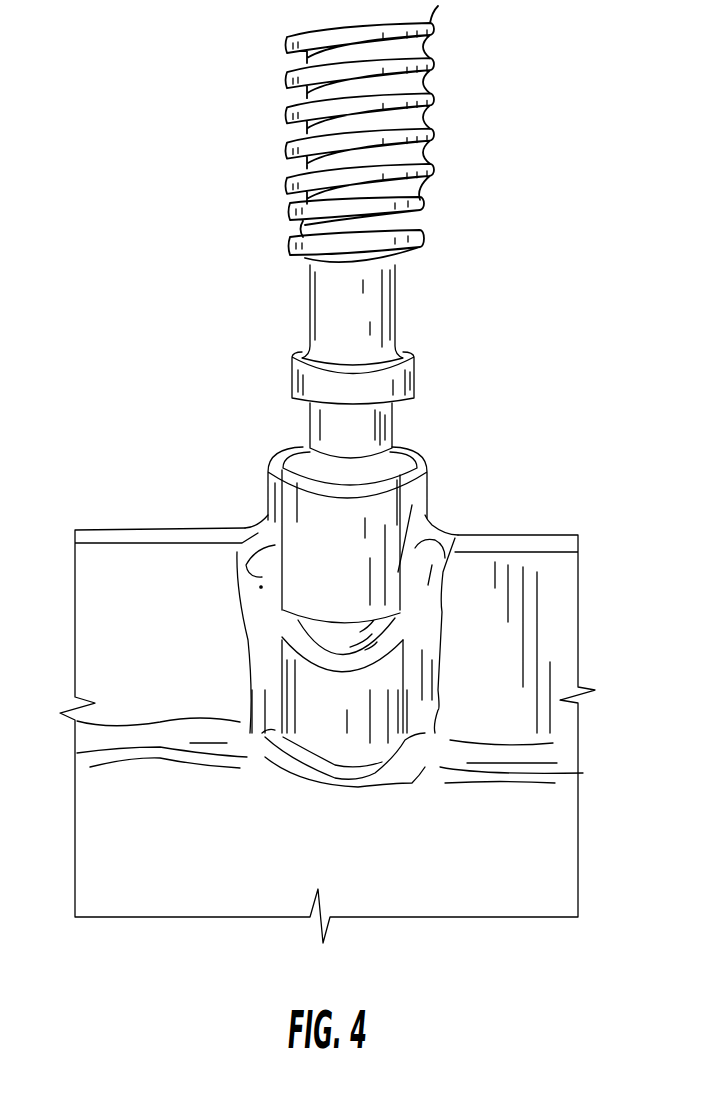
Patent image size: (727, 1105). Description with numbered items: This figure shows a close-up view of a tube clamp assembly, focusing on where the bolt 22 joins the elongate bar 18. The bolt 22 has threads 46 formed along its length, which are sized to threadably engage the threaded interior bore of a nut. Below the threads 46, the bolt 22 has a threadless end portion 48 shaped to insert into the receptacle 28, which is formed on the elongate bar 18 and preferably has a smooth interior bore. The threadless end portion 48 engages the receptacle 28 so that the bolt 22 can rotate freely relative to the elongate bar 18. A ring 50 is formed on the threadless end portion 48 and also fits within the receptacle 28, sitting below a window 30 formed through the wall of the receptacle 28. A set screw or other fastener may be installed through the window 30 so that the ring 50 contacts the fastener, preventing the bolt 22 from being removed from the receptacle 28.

The elongate bar 18 is at (562, 651).
The bolt 22 is at (428, 230).
The receptacle 28 is at (420, 492).
The window 30 is at (320, 637).
The threads 46 is at (432, 100).
The threadless end portion 48 is at (382, 312).
The ring 50 is at (405, 387).